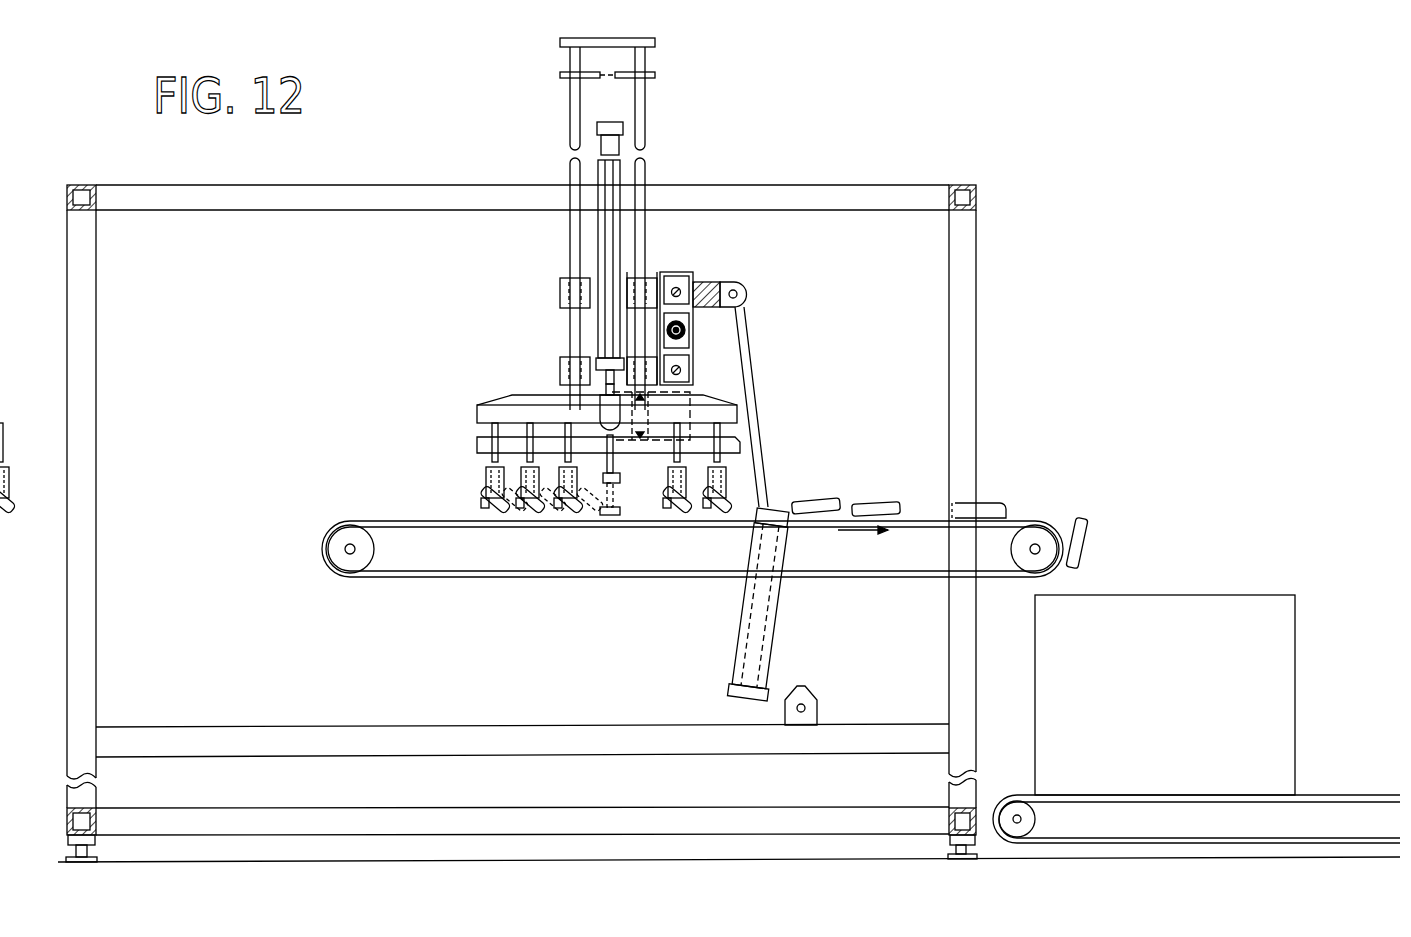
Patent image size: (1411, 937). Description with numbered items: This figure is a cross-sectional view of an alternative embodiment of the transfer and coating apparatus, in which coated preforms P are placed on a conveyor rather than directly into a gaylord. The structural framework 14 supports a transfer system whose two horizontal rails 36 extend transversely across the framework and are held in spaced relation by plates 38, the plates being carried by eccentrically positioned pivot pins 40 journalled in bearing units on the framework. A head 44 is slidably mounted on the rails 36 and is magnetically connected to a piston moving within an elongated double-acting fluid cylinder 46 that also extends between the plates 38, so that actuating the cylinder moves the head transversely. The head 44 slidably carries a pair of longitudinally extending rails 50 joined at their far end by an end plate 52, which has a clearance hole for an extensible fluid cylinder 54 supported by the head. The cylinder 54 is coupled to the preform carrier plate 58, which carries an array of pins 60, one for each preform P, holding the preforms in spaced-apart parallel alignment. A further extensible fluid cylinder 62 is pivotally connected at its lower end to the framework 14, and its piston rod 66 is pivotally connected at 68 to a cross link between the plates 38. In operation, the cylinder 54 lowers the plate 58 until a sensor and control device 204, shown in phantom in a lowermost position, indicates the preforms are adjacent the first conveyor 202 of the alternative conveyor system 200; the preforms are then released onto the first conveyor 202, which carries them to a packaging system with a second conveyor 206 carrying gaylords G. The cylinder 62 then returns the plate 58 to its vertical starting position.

The structural framework 14 is at (978, 362).
The horizontal rails 36 is at (682, 290).
The plates 38 is at (693, 340).
The pivot pins 40 is at (690, 398).
The head 44 is at (560, 334).
The fluid cylinder 46 is at (685, 328).
The longitudinally extending rails 50 is at (570, 244).
The end plate 52 is at (655, 45).
The extensible fluid cylinder 54 is at (620, 240).
The preform carrier plate 58 is at (477, 415).
The pins 60 is at (490, 460).
The extensible fluid cylinder 62 is at (800, 647).
The piston rod 66 is at (766, 433).
The pivotal connection 68 is at (723, 282).
The conveyor system 200 is at (1138, 490).
The first conveyor 202 is at (1018, 517).
The sensor and control device 204 is at (622, 483).
The second conveyor 206 is at (1330, 794).
The preforms P is at (590, 537).
The gaylords G is at (1293, 711).